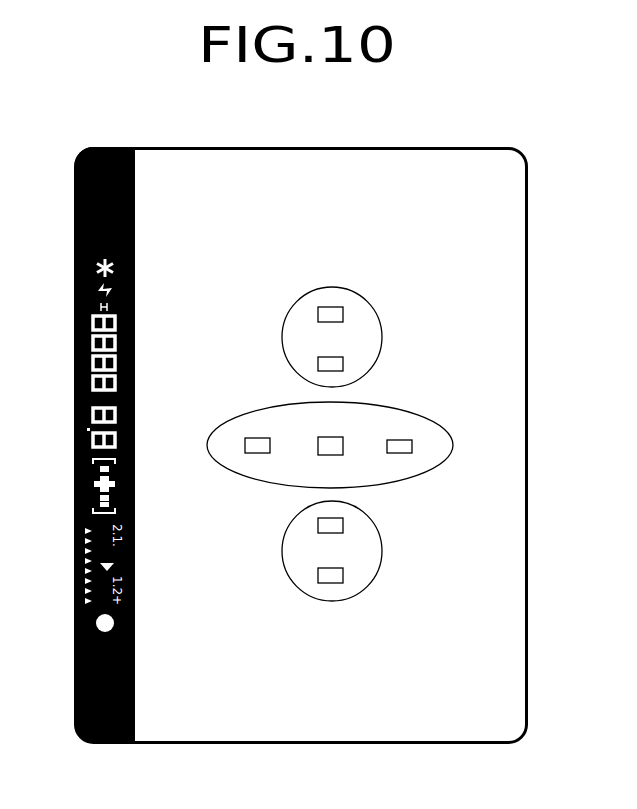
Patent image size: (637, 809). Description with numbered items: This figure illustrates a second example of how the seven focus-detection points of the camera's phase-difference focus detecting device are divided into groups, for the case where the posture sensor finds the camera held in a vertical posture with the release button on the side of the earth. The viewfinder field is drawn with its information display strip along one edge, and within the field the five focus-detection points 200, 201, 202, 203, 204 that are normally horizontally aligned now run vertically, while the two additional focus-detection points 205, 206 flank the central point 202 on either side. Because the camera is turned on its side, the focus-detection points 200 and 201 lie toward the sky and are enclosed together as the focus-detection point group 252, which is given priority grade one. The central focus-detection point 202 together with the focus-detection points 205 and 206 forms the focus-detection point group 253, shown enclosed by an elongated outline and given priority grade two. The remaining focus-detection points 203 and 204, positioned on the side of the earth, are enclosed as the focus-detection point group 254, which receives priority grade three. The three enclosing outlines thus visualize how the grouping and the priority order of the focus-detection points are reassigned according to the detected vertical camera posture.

The focus-detection point 200 is at (318, 312).
The focus-detection point 201 is at (318, 362).
The focus-detection point 202 is at (343, 440).
The focus-detection point 203 is at (318, 524).
The focus-detection point 204 is at (318, 576).
The focus-detection point 205 is at (410, 446).
The focus-detection point 206 is at (254, 438).
The focus-detection point group 252 is at (372, 302).
The focus-detection point group 253 is at (397, 480).
The focus-detection point group 254 is at (372, 580).